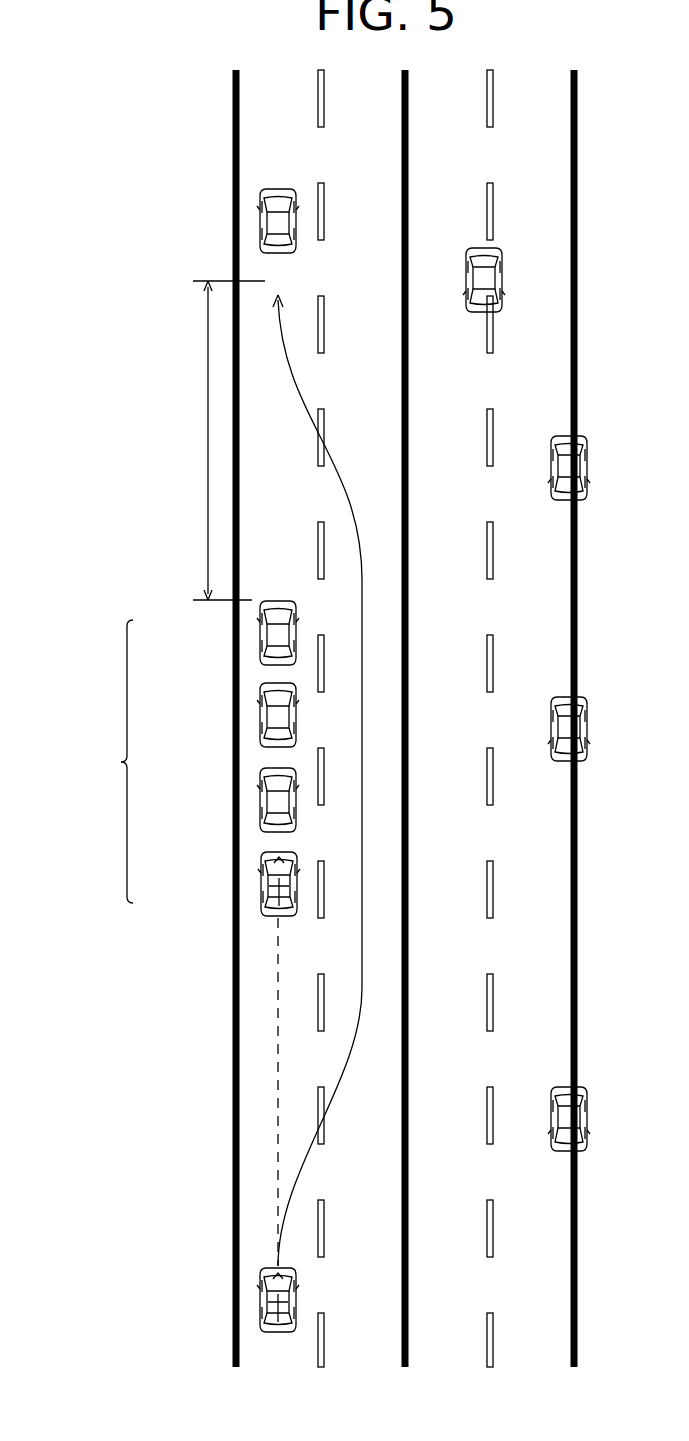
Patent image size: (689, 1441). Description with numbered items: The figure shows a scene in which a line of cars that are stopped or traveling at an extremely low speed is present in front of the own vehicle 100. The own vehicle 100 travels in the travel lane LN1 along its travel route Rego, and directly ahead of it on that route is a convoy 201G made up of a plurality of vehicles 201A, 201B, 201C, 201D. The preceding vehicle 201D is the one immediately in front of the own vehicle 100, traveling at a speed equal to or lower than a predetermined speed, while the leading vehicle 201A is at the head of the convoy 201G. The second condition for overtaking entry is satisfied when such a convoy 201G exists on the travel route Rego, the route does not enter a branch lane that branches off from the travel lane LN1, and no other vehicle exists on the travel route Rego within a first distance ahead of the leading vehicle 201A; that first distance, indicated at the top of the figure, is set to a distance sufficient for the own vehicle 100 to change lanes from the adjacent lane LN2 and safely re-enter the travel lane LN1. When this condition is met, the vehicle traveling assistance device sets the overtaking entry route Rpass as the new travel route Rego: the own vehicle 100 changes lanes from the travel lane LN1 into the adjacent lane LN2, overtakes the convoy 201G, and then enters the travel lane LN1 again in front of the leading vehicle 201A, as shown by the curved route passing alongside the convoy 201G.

The own vehicle 100 is at (299, 1293).
The leading vehicle 201A is at (260, 635).
The vehicle 201B is at (260, 718).
The vehicle 201C is at (260, 803).
The preceding vehicle 201D is at (261, 887).
The convoy 201G is at (173, 758).
The travel lane LN1 is at (302, 510).
The adjacent lane LN2 is at (385, 398).
The overtaking entry route Rpass is at (362, 831).
The travel route Rego is at (277, 1048).